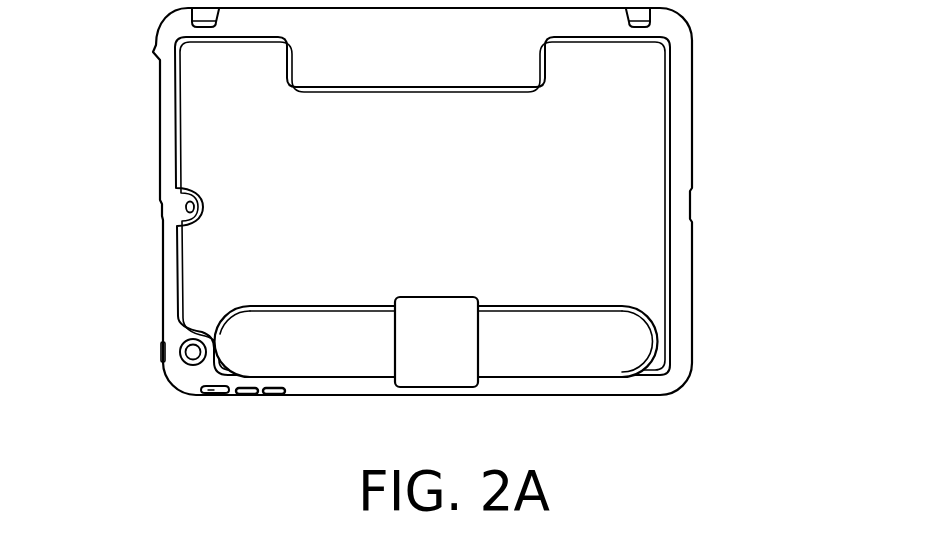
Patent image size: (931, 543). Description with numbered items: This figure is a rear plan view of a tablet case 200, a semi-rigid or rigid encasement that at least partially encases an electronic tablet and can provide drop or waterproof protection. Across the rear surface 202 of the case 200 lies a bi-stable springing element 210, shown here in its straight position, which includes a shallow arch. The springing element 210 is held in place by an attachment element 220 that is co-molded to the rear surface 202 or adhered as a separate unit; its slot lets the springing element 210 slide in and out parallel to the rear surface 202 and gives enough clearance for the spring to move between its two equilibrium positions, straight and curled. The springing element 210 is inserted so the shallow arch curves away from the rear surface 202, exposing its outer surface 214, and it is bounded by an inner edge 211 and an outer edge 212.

The tablet case 200 is at (716, 107).
The rear surface 202 is at (231, 163).
The bi-stable springing element 210 is at (408, 335).
The inner edge 211 is at (606, 306).
The outer edge 212 is at (344, 370).
The outer surface 214 is at (250, 333).
The attachment element 220 is at (443, 357).